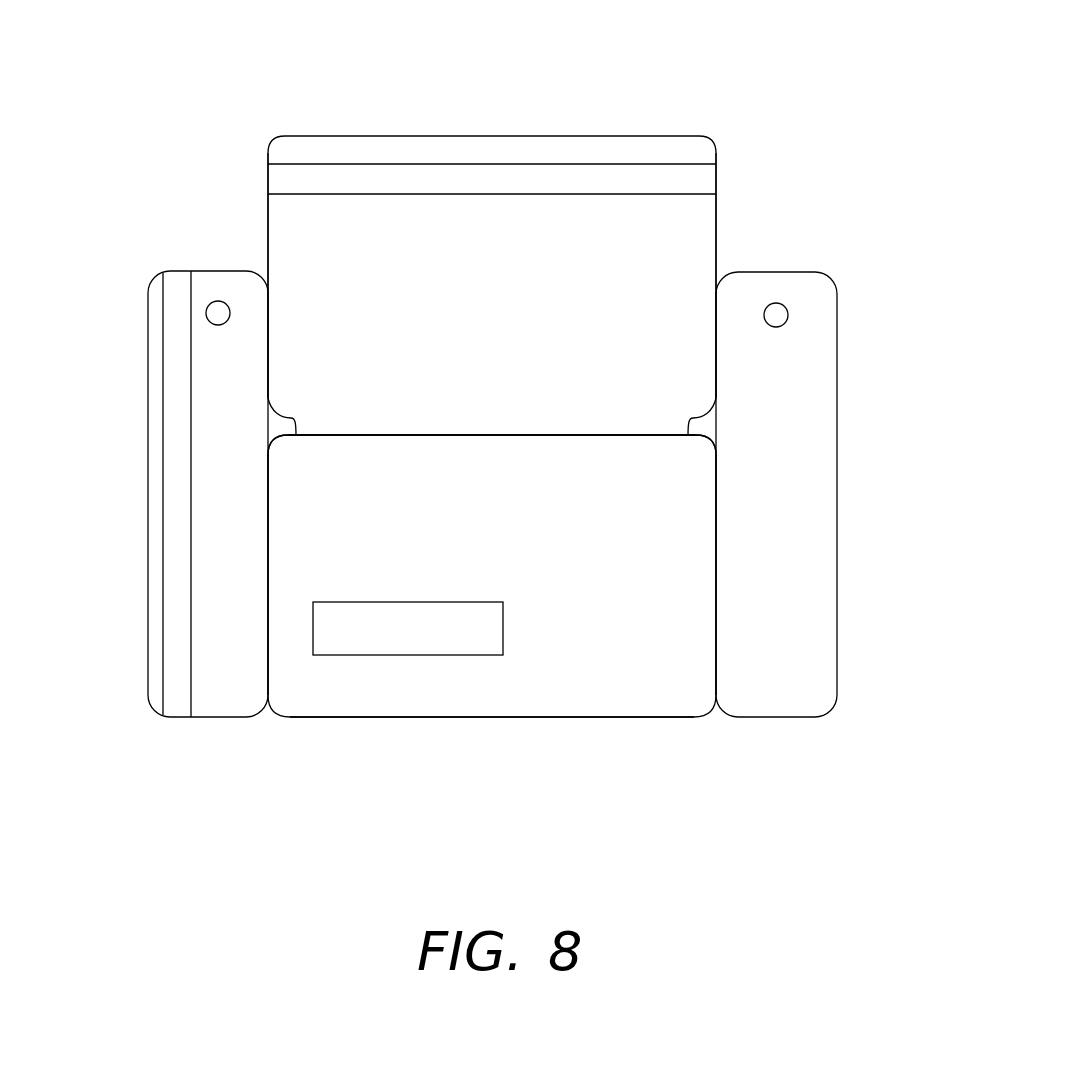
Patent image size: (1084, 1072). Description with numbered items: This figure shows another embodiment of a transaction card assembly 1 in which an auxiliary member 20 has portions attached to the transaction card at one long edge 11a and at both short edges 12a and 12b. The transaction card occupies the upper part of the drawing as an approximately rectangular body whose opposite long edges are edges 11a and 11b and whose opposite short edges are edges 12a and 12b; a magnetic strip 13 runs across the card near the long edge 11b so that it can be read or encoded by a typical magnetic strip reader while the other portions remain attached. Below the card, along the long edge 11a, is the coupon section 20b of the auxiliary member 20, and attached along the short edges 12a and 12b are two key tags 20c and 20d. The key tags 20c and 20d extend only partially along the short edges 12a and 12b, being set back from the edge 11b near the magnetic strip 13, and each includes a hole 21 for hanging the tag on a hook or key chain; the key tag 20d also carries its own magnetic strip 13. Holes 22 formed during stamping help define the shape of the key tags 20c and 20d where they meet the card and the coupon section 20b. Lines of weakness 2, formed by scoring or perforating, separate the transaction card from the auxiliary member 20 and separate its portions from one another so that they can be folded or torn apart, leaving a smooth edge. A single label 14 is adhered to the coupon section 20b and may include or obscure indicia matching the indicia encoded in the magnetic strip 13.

The transaction card assembly 1 is at (226, 92).
The line of weakness 2 is at (550, 437).
The long edge 11a is at (698, 437).
The long edge 11b is at (378, 136).
The short edge 12a is at (267, 240).
The short edge 12b is at (718, 240).
The magnetic strip 13 is at (560, 165).
The label 14 is at (472, 602).
The auxiliary member 20 is at (402, 719).
The coupon section 20b is at (515, 717).
The key tag 20c is at (808, 717).
The key tag 20d is at (207, 716).
The hole 21 is at (212, 300).
The hole 22 is at (290, 429).